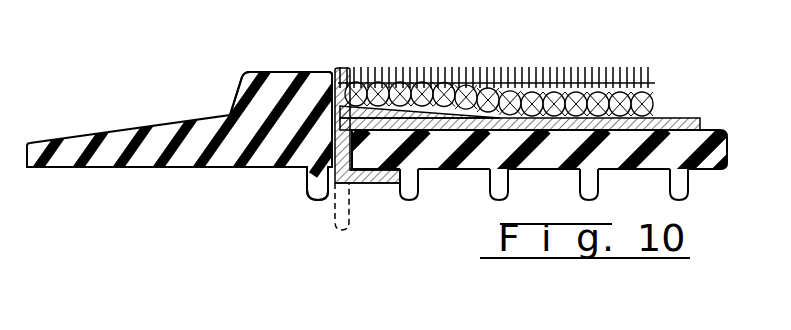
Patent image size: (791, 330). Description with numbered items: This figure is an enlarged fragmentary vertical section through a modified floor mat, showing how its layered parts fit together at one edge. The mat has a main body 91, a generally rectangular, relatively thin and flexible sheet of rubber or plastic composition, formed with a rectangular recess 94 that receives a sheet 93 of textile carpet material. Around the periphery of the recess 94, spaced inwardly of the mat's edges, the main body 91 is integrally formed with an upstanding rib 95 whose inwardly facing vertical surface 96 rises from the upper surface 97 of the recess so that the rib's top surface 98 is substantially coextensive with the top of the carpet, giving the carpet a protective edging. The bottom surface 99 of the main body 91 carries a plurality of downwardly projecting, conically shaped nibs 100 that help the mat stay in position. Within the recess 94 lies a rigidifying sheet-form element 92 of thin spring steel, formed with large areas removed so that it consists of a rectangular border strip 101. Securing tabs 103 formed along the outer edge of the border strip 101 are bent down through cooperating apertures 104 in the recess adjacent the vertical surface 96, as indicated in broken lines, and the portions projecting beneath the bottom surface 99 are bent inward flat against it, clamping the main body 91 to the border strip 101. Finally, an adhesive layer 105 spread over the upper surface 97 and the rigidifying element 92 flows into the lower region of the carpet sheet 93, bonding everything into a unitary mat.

The main body 91 is at (142, 112).
The rigidifying sheet-form element 92 is at (477, 78).
The sheet of textile carpet material 93 is at (578, 75).
The recess 94 is at (342, 70).
The upstanding rib 95 is at (237, 100).
The inwardly facing vertical surface 96 is at (331, 72).
The upper surface 97 is at (713, 131).
The top surface 98 is at (283, 68).
The bottom surface 99 is at (703, 170).
The nibs 100 is at (310, 178).
The border strip 101 is at (420, 68).
The securing tabs 103 is at (338, 212).
The apertures 104 is at (337, 181).
The adhesive layer 105 is at (697, 122).